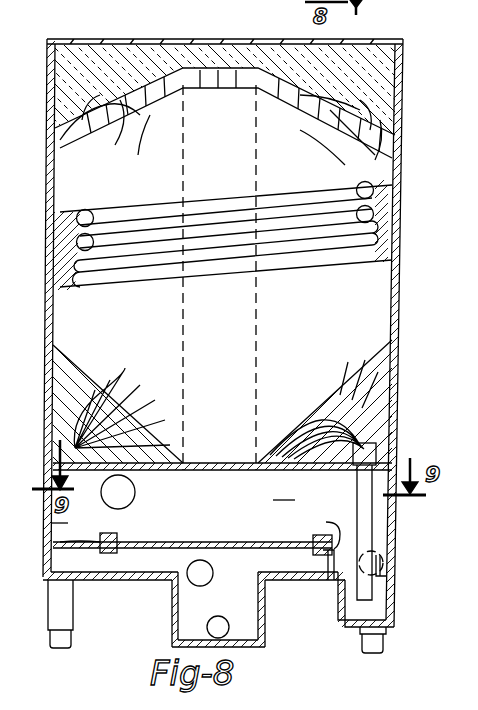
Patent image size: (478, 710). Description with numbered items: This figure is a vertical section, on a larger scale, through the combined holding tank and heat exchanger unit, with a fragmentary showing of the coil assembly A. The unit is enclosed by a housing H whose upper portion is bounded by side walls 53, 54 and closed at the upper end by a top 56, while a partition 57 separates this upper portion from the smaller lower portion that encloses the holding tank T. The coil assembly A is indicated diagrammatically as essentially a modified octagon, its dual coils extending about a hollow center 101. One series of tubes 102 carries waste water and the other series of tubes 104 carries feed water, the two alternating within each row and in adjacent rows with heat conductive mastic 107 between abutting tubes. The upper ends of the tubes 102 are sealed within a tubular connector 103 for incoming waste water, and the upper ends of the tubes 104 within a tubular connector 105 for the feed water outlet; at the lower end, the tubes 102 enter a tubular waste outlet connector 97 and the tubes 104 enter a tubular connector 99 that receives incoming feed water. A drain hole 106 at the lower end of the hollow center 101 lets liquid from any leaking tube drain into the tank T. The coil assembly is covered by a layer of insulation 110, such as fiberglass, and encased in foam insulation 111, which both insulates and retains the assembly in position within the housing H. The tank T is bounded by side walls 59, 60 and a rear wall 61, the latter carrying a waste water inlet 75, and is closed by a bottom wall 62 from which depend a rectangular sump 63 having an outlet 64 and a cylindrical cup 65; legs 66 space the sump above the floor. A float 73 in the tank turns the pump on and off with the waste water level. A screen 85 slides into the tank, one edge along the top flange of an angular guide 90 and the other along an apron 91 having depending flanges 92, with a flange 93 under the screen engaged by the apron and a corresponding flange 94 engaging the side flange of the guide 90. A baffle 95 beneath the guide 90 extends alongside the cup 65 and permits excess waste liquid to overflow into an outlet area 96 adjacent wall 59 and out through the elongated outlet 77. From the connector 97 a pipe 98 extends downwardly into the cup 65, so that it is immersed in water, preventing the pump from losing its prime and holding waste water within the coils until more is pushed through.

The side wall 53 is at (402, 288).
The side wall 54 is at (54, 157).
The top 56 is at (403, 66).
The partition 57 is at (310, 470).
The side wall 59 is at (393, 552).
The side wall 60 is at (57, 524).
The rear wall 61 is at (286, 490).
The bottom wall 62 is at (119, 583).
The sump 63 is at (278, 632).
The outlet 64 is at (236, 608).
The cup 65 is at (333, 621).
The legs 66 is at (72, 618).
The float 73 is at (212, 574).
The waste water inlet 75 is at (136, 492).
The outlet 77 is at (384, 562).
The screen 85 is at (219, 544).
The angular guide 90 is at (333, 525).
The apron 91 is at (95, 562).
The depending flanges 92 is at (85, 544).
The flange 93 is at (116, 542).
The flange 94 is at (315, 534).
The baffle 95 is at (325, 568).
The outlet area 96 is at (389, 581).
The tubular waste outlet connector 97 is at (381, 456).
The pipe 98 is at (365, 590).
The tubular connector 99 is at (88, 485).
The hollow center 101 is at (262, 332).
The tubes 102 is at (126, 132).
The tubular connector 103 is at (106, 85).
The tubes 104 is at (337, 134).
The tubular connector 105 is at (380, 107).
The drain hole 106 is at (216, 457).
The heat conductive mastic 107 is at (56, 215).
The insulation 110 is at (223, 86).
The foam insulation 111 is at (125, 63).
The coil assembly A is at (192, 276).
The housing H is at (404, 248).
The holding tank T is at (208, 505).